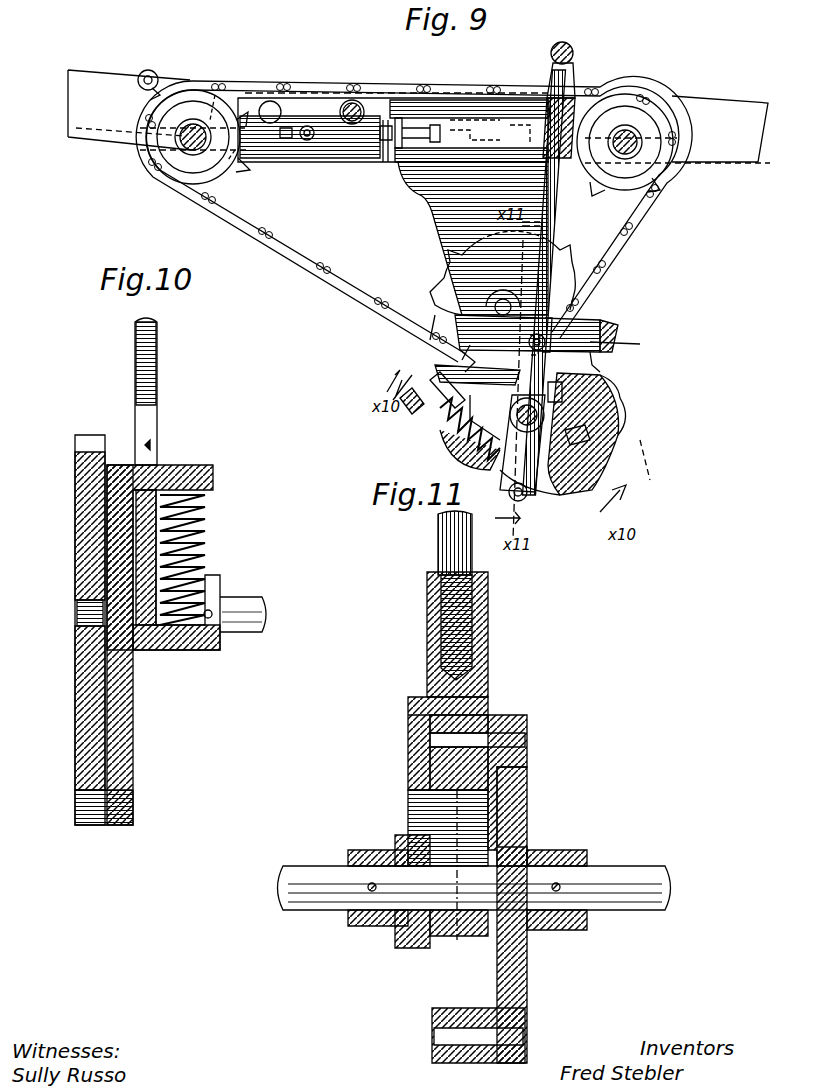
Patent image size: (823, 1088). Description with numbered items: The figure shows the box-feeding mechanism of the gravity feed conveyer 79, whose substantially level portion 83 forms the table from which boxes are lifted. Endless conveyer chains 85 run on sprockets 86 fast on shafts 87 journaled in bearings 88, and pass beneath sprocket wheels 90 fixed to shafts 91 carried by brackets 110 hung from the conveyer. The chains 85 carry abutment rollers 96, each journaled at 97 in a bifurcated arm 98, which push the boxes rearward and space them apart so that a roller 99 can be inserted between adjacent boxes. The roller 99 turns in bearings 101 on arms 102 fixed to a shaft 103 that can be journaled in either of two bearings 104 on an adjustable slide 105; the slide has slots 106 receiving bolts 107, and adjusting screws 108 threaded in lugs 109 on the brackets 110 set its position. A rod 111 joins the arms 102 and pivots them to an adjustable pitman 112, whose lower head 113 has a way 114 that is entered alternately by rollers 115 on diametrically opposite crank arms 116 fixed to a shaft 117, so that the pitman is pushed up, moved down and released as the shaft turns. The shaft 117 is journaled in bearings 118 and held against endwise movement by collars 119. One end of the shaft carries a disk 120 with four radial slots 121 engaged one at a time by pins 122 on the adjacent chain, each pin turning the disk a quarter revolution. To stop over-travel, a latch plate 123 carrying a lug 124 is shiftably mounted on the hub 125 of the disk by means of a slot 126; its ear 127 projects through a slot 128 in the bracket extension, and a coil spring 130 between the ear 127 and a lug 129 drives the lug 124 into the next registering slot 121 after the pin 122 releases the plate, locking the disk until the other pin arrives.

In FIG. 9, the gravity feed conveyer 79 is at (85, 90).
In FIG. 9, the conveyer portion 83 is at (713, 98).
In FIG. 9, the endless conveyer chains 85 is at (325, 285).
In FIG. 9, the sprockets 86 is at (185, 160).
In FIG. 9, the shafts 87 is at (180, 140).
In FIG. 9, the bearings 88 is at (222, 100).
In FIG. 9, the sprocket wheels 90 is at (440, 300).
In FIG. 9, the shafts 91 is at (480, 295).
In FIG. 9, the rollers 96 is at (147, 70).
In FIG. 9, the journal 97 is at (152, 77).
In FIG. 9, the bifurcated arm 98 is at (160, 92).
In FIG. 9, the roller 99 is at (574, 50).
In FIG. 9, the bearings 101 is at (578, 74).
In FIG. 9, the arms 102 is at (440, 100).
In FIG. 9, the shaft 103 is at (352, 100).
In FIG. 9, the bearings 104 is at (275, 105).
In FIG. 9, the adjustable slide 105 is at (312, 150).
In FIG. 9, the slots 106 is at (284, 140).
In FIG. 9, the bolts 107 is at (306, 142).
In FIG. 9, the adjusting screws 108 is at (385, 166).
In FIG. 9, the lugs 109 is at (396, 118).
In FIG. 9, the brackets 110 is at (428, 205).
In FIG. 10, the brackets 110 is at (157, 385).
In FIG. 9, the rod 111 is at (549, 105).
In FIG. 9, the adjustable pitman 112 is at (552, 210).
In FIG. 11, the adjustable pitman 112 is at (445, 545).
In FIG. 9, the head 113 is at (600, 322).
In FIG. 11, the head 113 is at (490, 694).
In FIG. 9, the way 114 is at (605, 335).
In FIG. 11, the way 114 is at (420, 705).
In FIG. 9, the rollers 115 is at (556, 312).
In FIG. 11, the rollers 115 is at (432, 760).
In FIG. 9, the crank arms 116 is at (600, 452).
In FIG. 11, the crank arms 116 is at (527, 805).
In FIG. 9, the shaft 117 is at (545, 414).
In FIG. 10, the shaft 117 is at (258, 605).
In FIG. 11, the shaft 117 is at (300, 866).
In FIG. 10, the bearings 118 is at (212, 560).
In FIG. 10, the collars 119 is at (212, 610).
In FIG. 9, the disk 120 is at (605, 390).
In FIG. 10, the disk 120 is at (90, 700).
In FIG. 9, the slots 121 is at (592, 430).
In FIG. 10, the slots 121 is at (92, 435).
In FIG. 9, the pins 122 is at (545, 75).
In FIG. 9, the latch plate 123 is at (615, 340).
In FIG. 10, the latch plate 123 is at (118, 754).
In FIG. 9, the lug 124 is at (630, 474).
In FIG. 10, the lug 124 is at (95, 812).
In FIG. 10, the hub 125 is at (133, 675).
In FIG. 9, the slot 126 is at (545, 410).
In FIG. 10, the slot 126 is at (150, 445).
In FIG. 9, the ear 127 is at (470, 440).
In FIG. 10, the ear 127 is at (180, 470).
In FIG. 9, the slot 128 is at (412, 414).
In FIG. 9, the lug 129 is at (560, 500).
In FIG. 10, the lug 129 is at (198, 640).
In FIG. 9, the coil spring 130 is at (490, 455).
In FIG. 10, the coil spring 130 is at (205, 520).